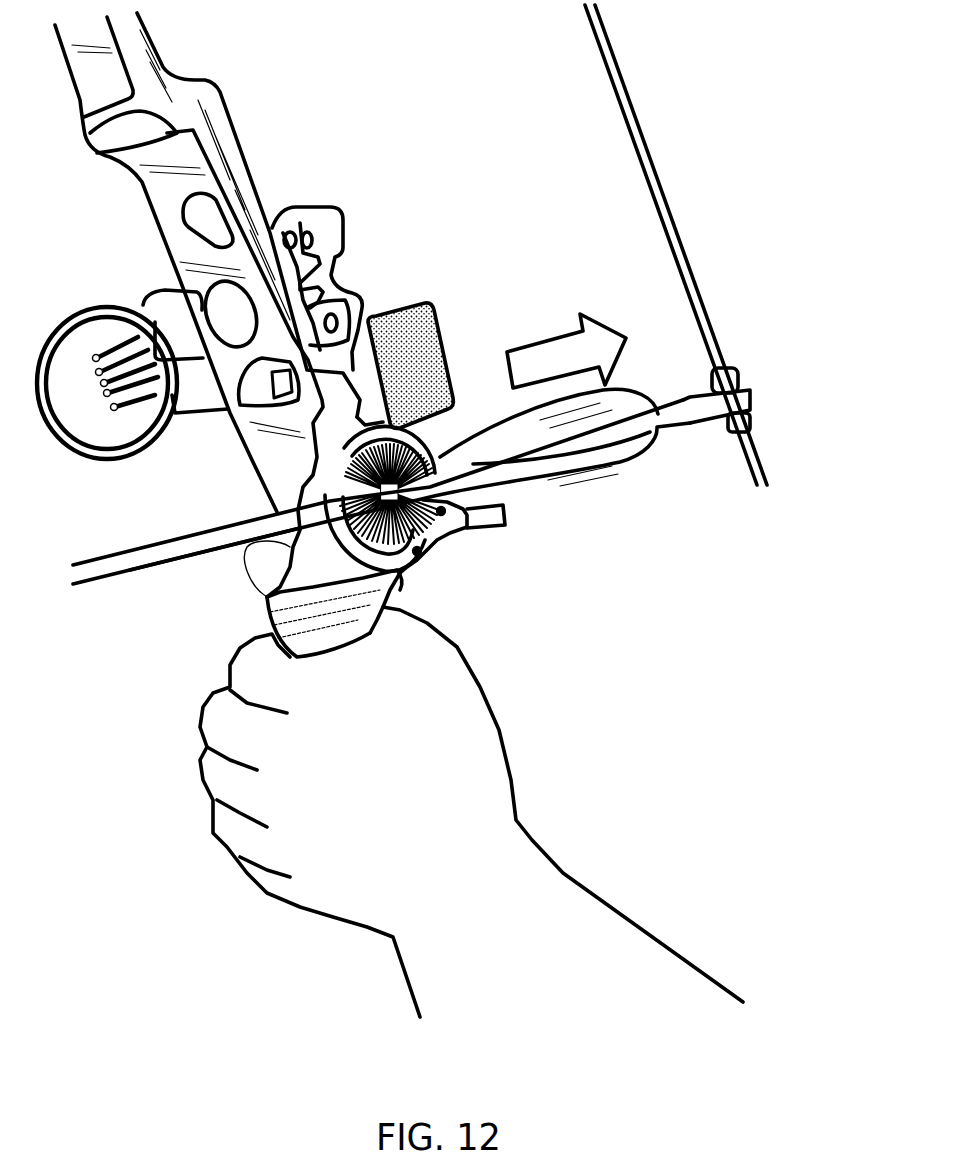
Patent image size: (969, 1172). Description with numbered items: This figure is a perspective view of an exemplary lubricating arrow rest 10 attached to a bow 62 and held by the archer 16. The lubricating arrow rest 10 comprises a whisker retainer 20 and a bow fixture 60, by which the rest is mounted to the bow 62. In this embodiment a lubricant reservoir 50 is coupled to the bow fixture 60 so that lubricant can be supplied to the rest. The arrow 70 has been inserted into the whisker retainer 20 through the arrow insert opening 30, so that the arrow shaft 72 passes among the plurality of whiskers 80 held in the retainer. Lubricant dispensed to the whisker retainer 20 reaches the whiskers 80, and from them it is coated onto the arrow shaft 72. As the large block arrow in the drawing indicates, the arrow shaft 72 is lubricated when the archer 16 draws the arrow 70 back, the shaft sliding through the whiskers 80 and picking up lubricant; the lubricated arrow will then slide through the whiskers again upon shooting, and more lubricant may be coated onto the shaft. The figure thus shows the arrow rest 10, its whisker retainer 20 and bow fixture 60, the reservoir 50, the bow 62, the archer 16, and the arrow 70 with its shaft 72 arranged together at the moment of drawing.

The lubricating arrow rest 10 is at (447, 300).
The archer 16 is at (540, 877).
The whisker retainer 20 is at (395, 575).
The arrow insert opening 30 is at (312, 476).
The lubricant reservoir 50 is at (433, 358).
The bow fixture 60 is at (447, 540).
The bow 62 is at (160, 190).
The arrow 70 is at (123, 553).
The arrow shaft 72 is at (130, 570).
The plurality of whiskers 80 is at (257, 603).